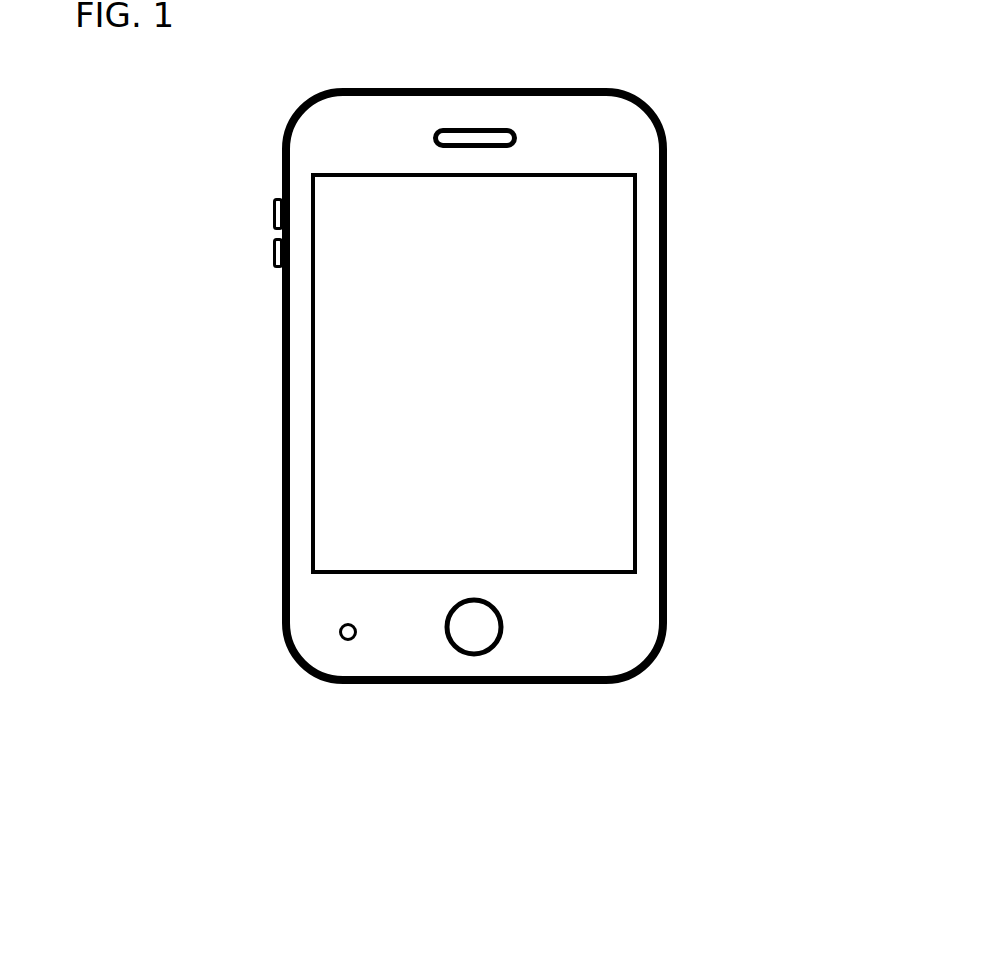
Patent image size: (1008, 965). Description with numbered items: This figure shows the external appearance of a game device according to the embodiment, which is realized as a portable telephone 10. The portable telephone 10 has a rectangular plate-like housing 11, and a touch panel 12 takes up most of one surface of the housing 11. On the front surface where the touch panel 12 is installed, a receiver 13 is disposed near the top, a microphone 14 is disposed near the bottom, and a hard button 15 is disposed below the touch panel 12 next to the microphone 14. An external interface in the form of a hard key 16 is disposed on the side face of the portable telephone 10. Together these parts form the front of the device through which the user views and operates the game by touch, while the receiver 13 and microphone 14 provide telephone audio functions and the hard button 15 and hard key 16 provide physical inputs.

The portable telephone 10 is at (717, 190).
The housing 11 is at (665, 542).
The touch panel 12 is at (597, 442).
The receiver 13 is at (475, 128).
The microphone 14 is at (341, 638).
The hard button 15 is at (495, 644).
The hard key 16 is at (273, 255).